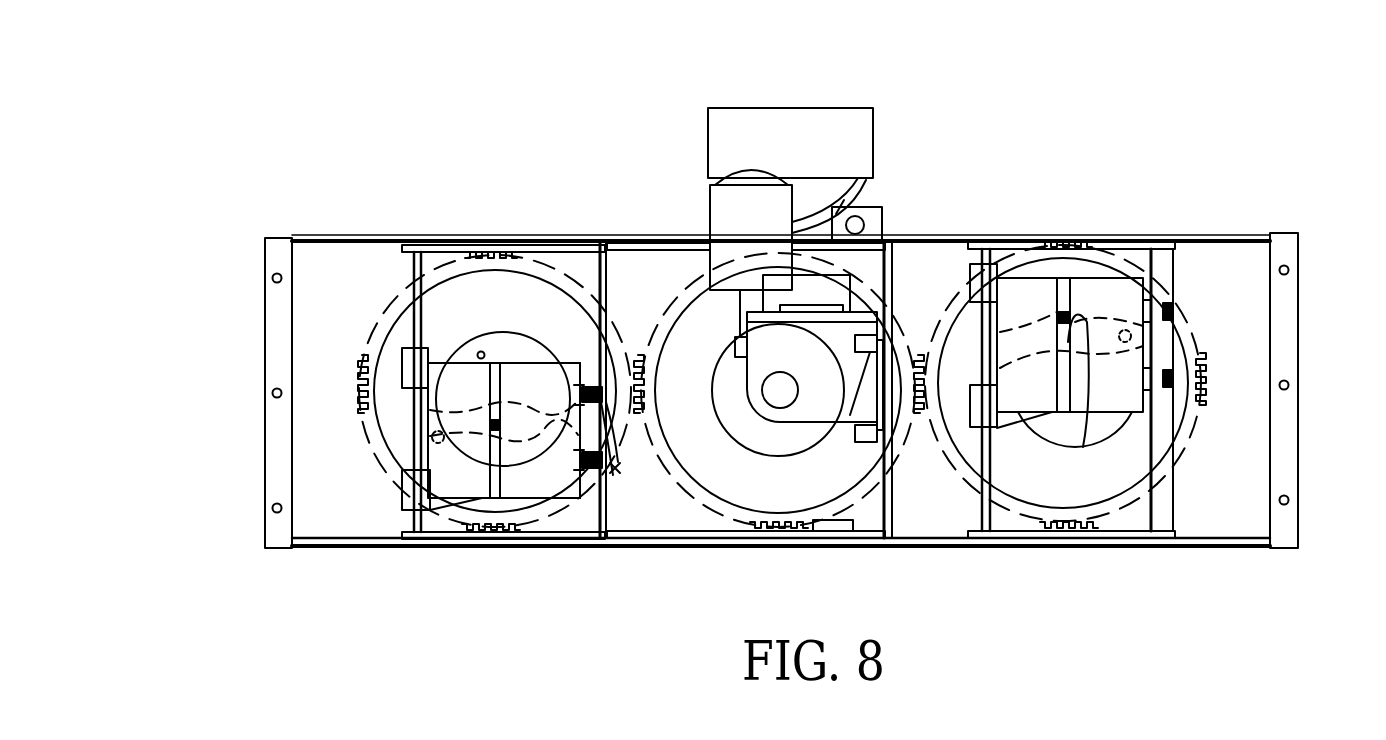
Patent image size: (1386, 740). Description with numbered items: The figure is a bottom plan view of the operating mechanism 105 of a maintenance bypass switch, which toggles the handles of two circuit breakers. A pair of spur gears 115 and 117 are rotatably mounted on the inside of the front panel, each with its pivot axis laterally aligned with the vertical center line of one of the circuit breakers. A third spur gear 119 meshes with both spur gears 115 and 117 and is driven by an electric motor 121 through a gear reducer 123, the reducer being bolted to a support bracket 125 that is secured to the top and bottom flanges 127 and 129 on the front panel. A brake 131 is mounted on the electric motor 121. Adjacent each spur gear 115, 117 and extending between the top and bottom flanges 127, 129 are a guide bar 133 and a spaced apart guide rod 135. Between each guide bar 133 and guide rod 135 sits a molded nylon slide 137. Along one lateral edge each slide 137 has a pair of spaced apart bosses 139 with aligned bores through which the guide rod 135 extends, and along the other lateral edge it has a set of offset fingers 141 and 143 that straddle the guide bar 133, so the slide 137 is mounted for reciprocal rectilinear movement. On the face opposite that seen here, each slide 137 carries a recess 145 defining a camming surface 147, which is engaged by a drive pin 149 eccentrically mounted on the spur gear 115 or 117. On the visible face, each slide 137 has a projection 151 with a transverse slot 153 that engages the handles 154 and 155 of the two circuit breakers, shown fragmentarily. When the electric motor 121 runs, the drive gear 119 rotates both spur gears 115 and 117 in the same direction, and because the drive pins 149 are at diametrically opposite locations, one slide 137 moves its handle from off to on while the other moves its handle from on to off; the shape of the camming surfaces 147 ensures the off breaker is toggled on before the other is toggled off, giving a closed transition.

The operating mechanism 105 is at (170, 323).
The spur gear 115 is at (1126, 492).
The spur gear 117 is at (378, 428).
The third spur gear 119 is at (712, 455).
The electric motor 121 is at (720, 212).
The gear reducer 123 is at (808, 412).
The support bracket 125 is at (910, 270).
The top flange 127 is at (1225, 235).
The bottom flange 129 is at (1227, 540).
The brake 131 is at (755, 108).
The guide bar 133 is at (596, 265).
The guide rod 135 is at (410, 455).
The molded nylon slide 137 is at (441, 357).
The boss 139 is at (400, 352).
The offset finger 141 is at (568, 386).
The offset finger 143 is at (618, 462).
The recess 145 is at (356, 347).
The camming surface 147 is at (443, 540).
The drive pin 149 is at (385, 449).
The projection 151 is at (530, 540).
The transverse slot 153 is at (471, 362).
The handle 154 is at (1058, 283).
The handle 155 is at (526, 366).